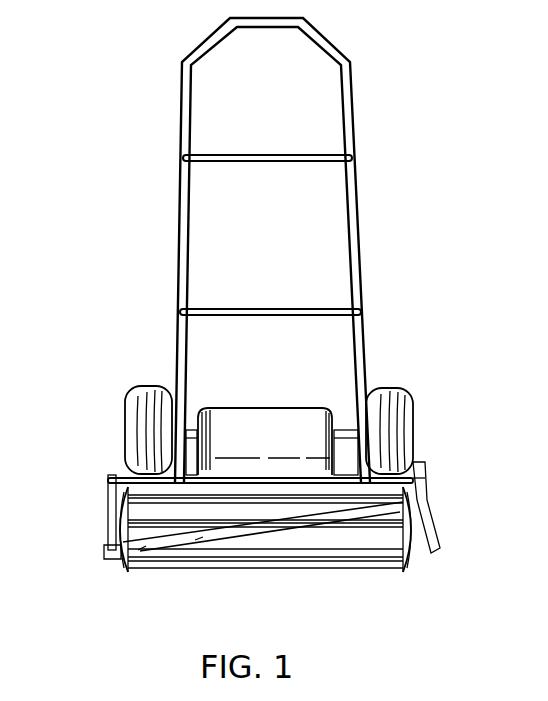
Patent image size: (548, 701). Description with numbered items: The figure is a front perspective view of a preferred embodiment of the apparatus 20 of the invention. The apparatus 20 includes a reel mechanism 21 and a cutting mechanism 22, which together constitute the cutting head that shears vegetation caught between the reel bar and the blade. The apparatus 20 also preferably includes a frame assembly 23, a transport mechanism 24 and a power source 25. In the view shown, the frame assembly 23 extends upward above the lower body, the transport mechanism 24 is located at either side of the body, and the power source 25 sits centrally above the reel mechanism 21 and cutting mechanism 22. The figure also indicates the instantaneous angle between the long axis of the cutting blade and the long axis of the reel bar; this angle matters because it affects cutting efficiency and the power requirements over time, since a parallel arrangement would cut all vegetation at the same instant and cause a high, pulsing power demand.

The apparatus 20 is at (362, 285).
The reel mechanism 21 is at (108, 520).
The cutting mechanism 22 is at (263, 538).
The frame assembly 23 is at (357, 200).
The transport mechanism 24 is at (124, 420).
The power source 25 is at (243, 405).